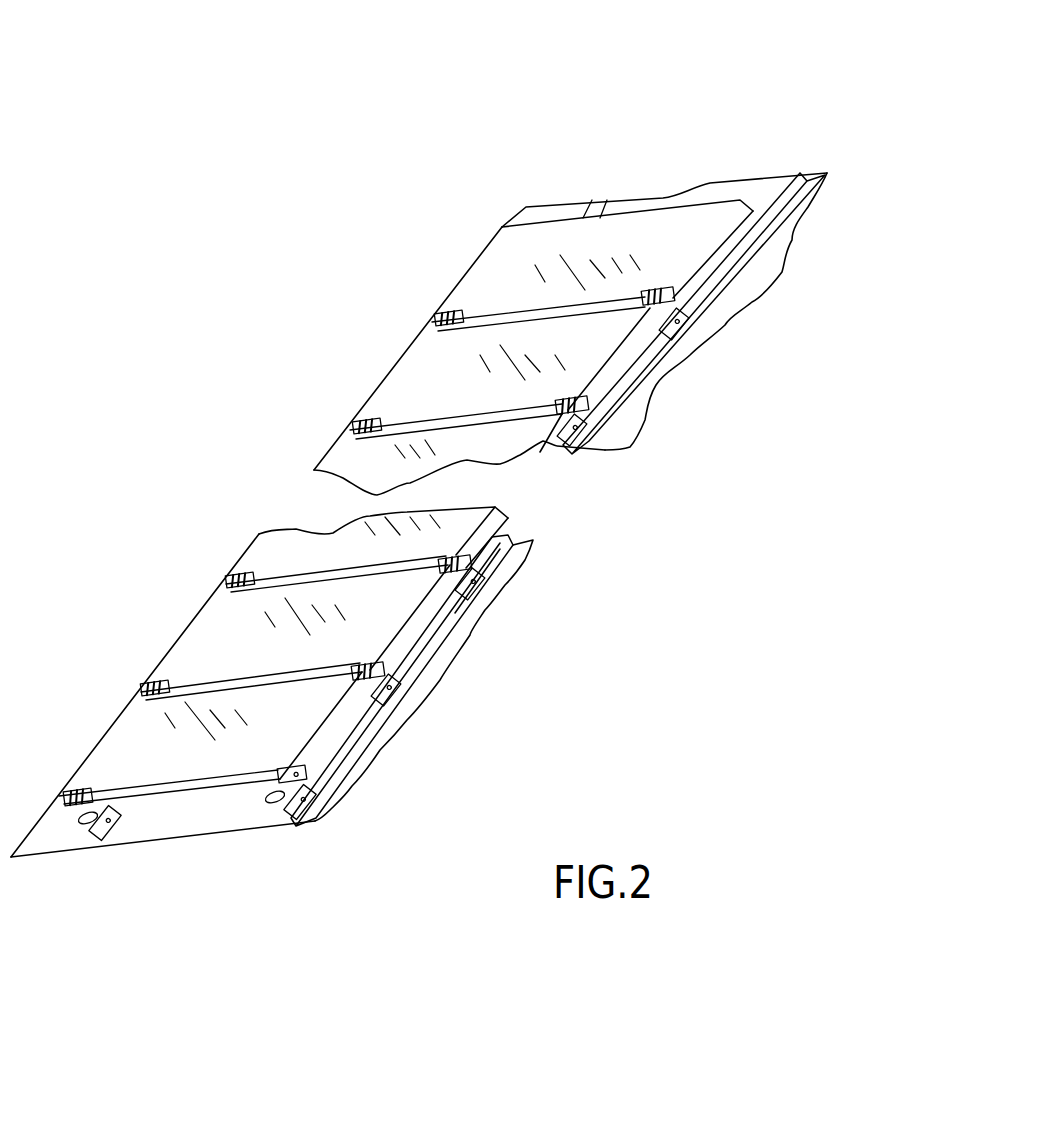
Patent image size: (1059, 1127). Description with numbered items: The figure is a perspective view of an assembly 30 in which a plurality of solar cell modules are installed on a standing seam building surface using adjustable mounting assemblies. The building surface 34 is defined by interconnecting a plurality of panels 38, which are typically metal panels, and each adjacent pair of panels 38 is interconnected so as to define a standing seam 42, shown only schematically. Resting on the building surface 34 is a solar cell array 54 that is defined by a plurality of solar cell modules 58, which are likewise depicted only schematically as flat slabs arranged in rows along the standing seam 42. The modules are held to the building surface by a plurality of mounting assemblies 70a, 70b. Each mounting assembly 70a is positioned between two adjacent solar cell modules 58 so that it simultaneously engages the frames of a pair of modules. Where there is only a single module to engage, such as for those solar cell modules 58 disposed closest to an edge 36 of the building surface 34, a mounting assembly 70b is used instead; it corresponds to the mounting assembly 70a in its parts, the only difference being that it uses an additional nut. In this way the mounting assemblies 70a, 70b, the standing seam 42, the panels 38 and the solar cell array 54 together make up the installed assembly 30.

The assembly 30 is at (707, 78).
The building surface 34 is at (663, 200).
The edge 36 is at (170, 838).
The panels 38 is at (540, 200).
The standing seam 42 is at (600, 200).
The solar cell array 54 is at (236, 373).
The solar cell modules 58 is at (608, 244).
The mounting assembly 70a is at (396, 328).
The mounting assembly 70b is at (243, 835).